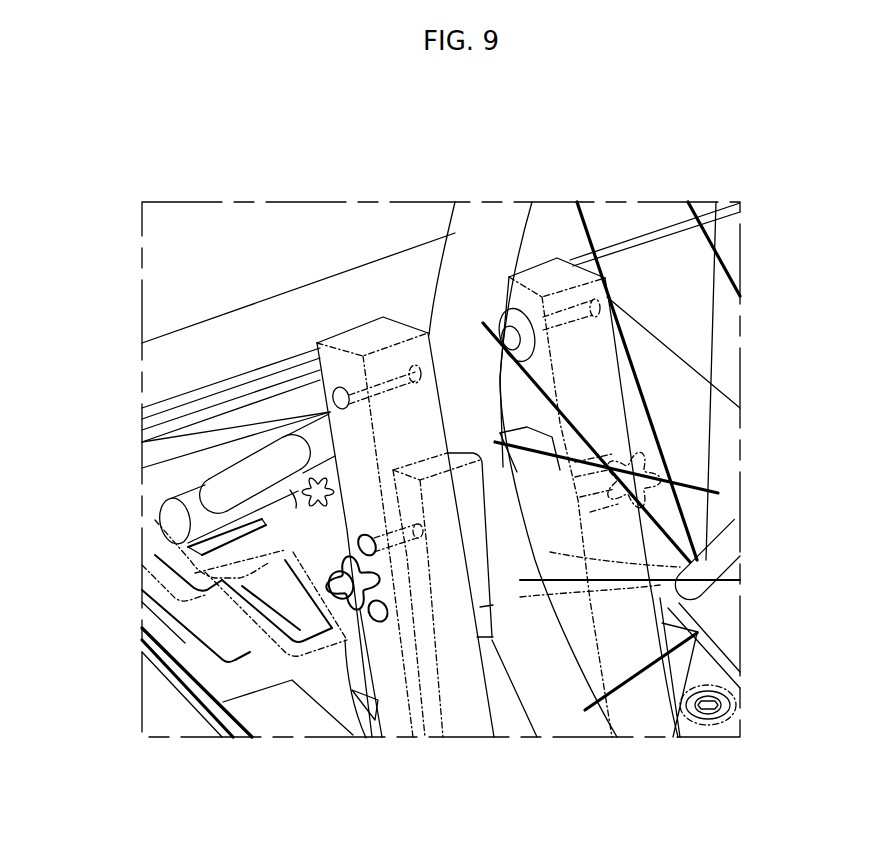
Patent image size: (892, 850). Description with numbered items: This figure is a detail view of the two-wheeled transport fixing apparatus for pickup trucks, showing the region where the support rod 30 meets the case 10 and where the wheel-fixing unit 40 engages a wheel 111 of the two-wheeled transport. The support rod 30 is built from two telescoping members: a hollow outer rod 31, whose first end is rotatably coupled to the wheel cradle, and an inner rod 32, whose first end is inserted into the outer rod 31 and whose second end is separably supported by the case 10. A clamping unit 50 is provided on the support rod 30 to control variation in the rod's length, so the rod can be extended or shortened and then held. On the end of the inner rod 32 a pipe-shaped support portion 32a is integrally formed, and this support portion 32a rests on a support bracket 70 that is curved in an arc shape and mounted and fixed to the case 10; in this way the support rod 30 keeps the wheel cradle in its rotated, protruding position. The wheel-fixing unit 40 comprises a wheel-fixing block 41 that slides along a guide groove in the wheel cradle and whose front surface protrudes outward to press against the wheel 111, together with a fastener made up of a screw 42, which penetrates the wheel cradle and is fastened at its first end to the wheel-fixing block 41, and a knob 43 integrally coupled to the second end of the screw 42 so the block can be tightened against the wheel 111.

The case 10 is at (247, 685).
The support rod 30 is at (186, 336).
The outer rod 31 is at (307, 440).
The inner rod 32 is at (262, 478).
The support portion 32a is at (205, 489).
The wheel-fixing unit 40 is at (308, 593).
The wheel-fixing block 41 is at (680, 600).
The screw 42 is at (440, 740).
The knob 43 is at (366, 738).
The clamping unit 50 is at (172, 522).
The support bracket 70 is at (183, 478).
The wheel 111 is at (474, 219).